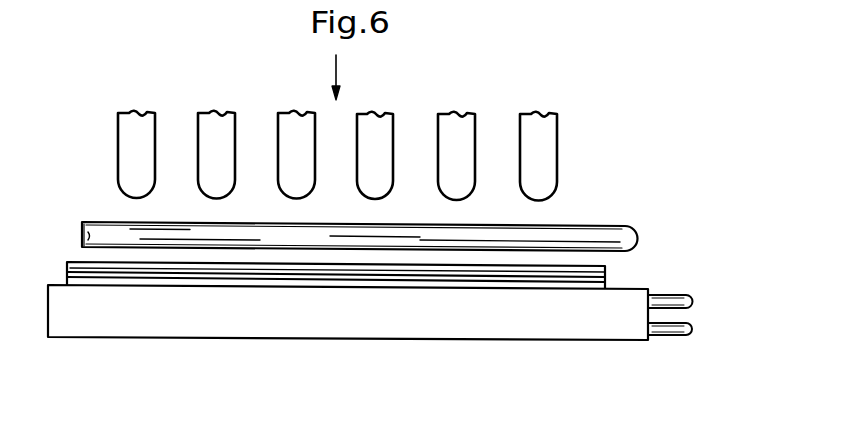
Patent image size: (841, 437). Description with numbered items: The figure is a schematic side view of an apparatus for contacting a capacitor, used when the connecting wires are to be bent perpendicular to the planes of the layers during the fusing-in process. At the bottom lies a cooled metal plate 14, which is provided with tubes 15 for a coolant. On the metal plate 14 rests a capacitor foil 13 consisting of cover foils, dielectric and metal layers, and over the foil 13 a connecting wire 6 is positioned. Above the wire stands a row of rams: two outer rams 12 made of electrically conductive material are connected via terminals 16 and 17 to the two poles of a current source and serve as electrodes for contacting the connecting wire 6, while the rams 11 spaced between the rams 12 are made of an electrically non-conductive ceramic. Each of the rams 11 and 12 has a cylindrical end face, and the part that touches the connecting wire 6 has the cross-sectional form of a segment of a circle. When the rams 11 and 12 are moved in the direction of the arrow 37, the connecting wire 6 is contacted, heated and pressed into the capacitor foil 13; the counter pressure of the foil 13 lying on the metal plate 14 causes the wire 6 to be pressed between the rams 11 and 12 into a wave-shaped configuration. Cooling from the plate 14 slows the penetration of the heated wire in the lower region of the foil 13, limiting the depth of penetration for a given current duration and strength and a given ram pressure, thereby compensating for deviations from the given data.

The connecting wire 6 is at (622, 236).
The rams 11 is at (289, 121).
The rams 12 is at (138, 125).
The capacitor foil 13 is at (67, 266).
The metal plate 14 is at (348, 330).
The tubes 15 is at (693, 302).
The terminal 16 is at (557, 140).
The terminal 17 is at (118, 135).
The arrow 37 is at (337, 67).